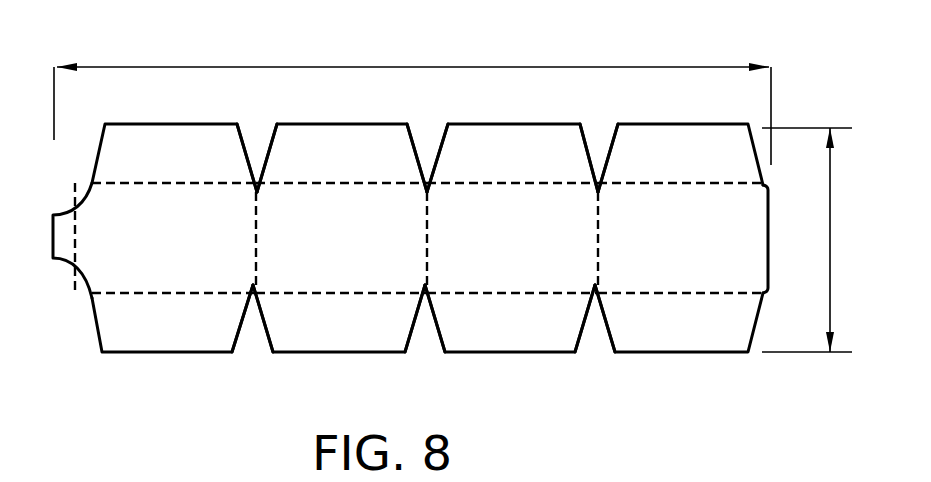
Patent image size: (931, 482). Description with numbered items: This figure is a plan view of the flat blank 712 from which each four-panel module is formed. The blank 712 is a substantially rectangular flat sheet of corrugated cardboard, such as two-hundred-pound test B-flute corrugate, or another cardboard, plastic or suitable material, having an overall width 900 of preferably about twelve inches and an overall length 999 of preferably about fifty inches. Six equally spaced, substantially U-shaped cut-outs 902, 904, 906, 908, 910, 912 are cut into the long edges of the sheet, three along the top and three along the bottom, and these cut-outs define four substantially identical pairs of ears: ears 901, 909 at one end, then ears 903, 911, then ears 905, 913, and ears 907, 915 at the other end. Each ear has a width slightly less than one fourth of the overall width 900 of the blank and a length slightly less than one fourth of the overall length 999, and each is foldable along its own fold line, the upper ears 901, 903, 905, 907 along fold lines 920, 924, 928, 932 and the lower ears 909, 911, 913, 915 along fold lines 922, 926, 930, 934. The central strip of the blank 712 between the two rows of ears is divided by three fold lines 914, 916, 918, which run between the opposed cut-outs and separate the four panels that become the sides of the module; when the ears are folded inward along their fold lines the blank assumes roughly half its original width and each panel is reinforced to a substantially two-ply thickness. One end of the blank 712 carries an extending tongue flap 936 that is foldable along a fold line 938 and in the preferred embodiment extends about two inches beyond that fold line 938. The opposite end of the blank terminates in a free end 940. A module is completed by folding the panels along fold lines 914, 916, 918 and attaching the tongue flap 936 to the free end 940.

The blank 712 is at (70, 325).
The overall width 900 is at (830, 247).
The overall length 999 is at (428, 66).
The ear 901 is at (174, 158).
The ear 903 is at (342, 158).
The ear 905 is at (512, 158).
The ear 907 is at (680, 158).
The ear 909 is at (172, 318).
The ear 911 is at (339, 318).
The ear 913 is at (510, 318).
The ear 915 is at (679, 318).
The U-shaped cut-out 902 is at (244, 140).
The U-shaped cut-out 904 is at (415, 140).
The U-shaped cut-out 906 is at (585, 140).
The U-shaped cut-out 908 is at (238, 330).
The U-shaped cut-out 910 is at (412, 335).
The U-shaped cut-out 912 is at (583, 335).
The fold line 914 is at (257, 248).
The fold line 916 is at (428, 250).
The fold line 918 is at (600, 257).
The fold line 920 is at (225, 183).
The fold line 924 is at (403, 185).
The fold line 928 is at (565, 185).
The fold line 932 is at (655, 185).
The fold line 922 is at (120, 292).
The fold line 926 is at (335, 292).
The fold line 930 is at (558, 292).
The fold line 934 is at (680, 293).
The tongue flap 936 is at (50, 235).
The fold line 938 is at (76, 240).
The free end 940 is at (772, 225).